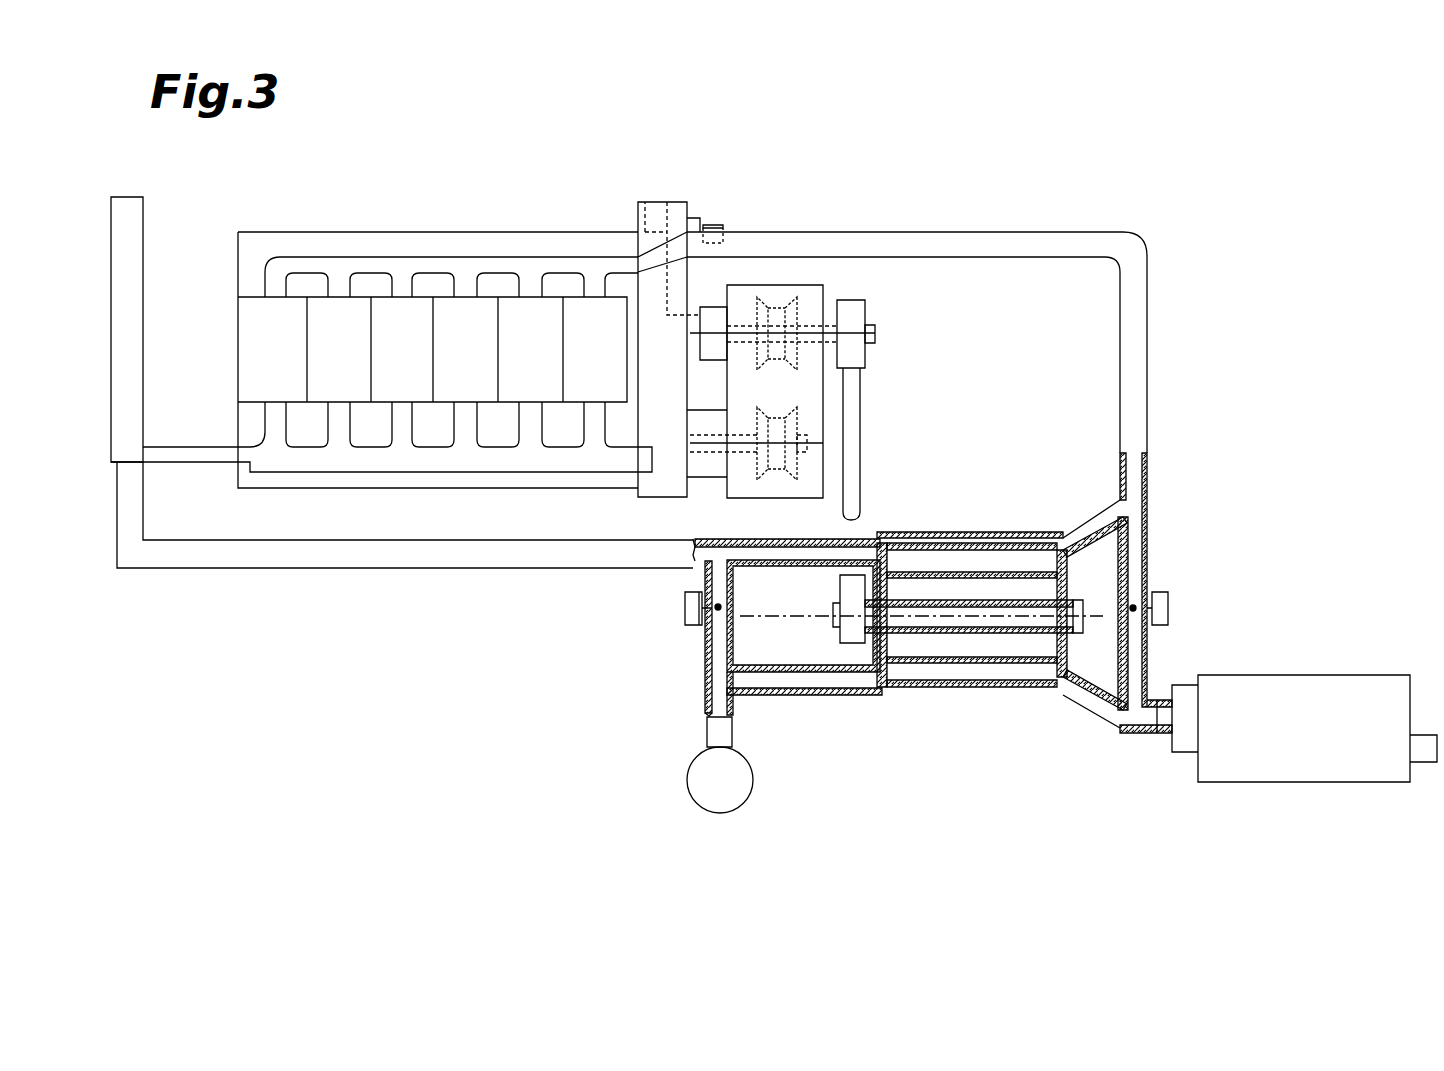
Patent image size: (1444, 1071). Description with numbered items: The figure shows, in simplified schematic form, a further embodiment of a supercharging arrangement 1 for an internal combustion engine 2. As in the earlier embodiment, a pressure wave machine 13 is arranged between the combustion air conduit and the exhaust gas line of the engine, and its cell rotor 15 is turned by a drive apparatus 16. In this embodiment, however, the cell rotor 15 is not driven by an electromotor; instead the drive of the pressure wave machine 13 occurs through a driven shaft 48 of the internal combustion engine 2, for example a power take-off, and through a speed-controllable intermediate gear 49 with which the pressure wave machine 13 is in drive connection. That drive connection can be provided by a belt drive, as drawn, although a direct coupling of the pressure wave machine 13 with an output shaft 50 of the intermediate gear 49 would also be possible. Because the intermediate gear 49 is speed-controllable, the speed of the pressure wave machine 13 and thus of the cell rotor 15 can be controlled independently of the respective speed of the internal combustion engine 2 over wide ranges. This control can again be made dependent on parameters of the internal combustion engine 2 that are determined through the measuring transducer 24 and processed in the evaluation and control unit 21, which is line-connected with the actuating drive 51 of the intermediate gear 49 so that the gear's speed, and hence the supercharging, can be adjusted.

The supercharging arrangement 1 is at (1209, 522).
The internal combustion engine 2 is at (416, 209).
The pressure wave machine 13 is at (940, 724).
The cell rotor 15 is at (1014, 677).
The drive apparatus 16 is at (929, 398).
The evaluation and control unit 21 is at (662, 217).
The measurement transducer 24 is at (739, 212).
The driven shaft 48 is at (808, 443).
The intermediate gear 49 is at (850, 273).
The output shaft 50 is at (878, 331).
The actuating drive 51 is at (716, 305).